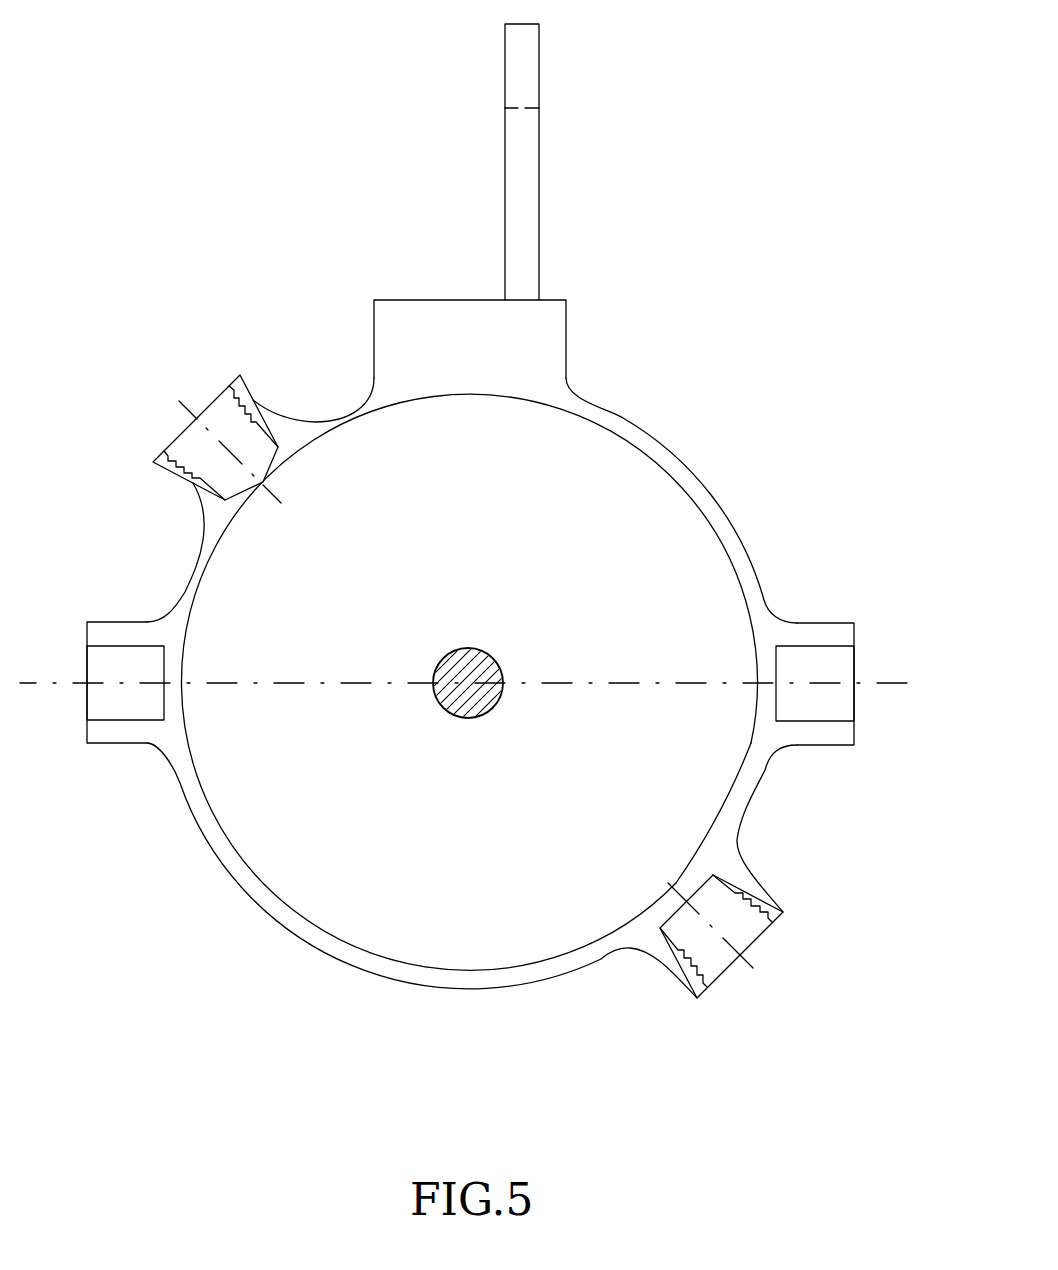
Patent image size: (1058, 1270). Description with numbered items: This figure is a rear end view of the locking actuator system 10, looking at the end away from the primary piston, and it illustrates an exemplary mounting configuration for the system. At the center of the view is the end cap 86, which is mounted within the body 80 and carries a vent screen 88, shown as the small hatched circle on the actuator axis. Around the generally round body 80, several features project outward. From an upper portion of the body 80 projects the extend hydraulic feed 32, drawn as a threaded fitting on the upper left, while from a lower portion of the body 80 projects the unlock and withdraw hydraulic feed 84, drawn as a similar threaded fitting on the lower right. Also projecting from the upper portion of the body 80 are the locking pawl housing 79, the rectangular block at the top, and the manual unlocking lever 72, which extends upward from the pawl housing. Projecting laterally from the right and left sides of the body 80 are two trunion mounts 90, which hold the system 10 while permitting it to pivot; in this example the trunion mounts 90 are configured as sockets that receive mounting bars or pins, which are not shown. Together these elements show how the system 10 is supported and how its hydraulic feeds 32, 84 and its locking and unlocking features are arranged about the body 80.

The locking actuator system 10 is at (545, 1030).
The extend hydraulic feed 32 is at (172, 388).
The manual unlocking lever 72 is at (523, 24).
The locking pawl housing 79 is at (566, 340).
The body 80 is at (690, 455).
The unlock and withdraw hydraulic feed 84 is at (755, 947).
The end cap 86 is at (297, 875).
The vent screen 88 is at (490, 708).
The trunion mounts 90 is at (85, 657).